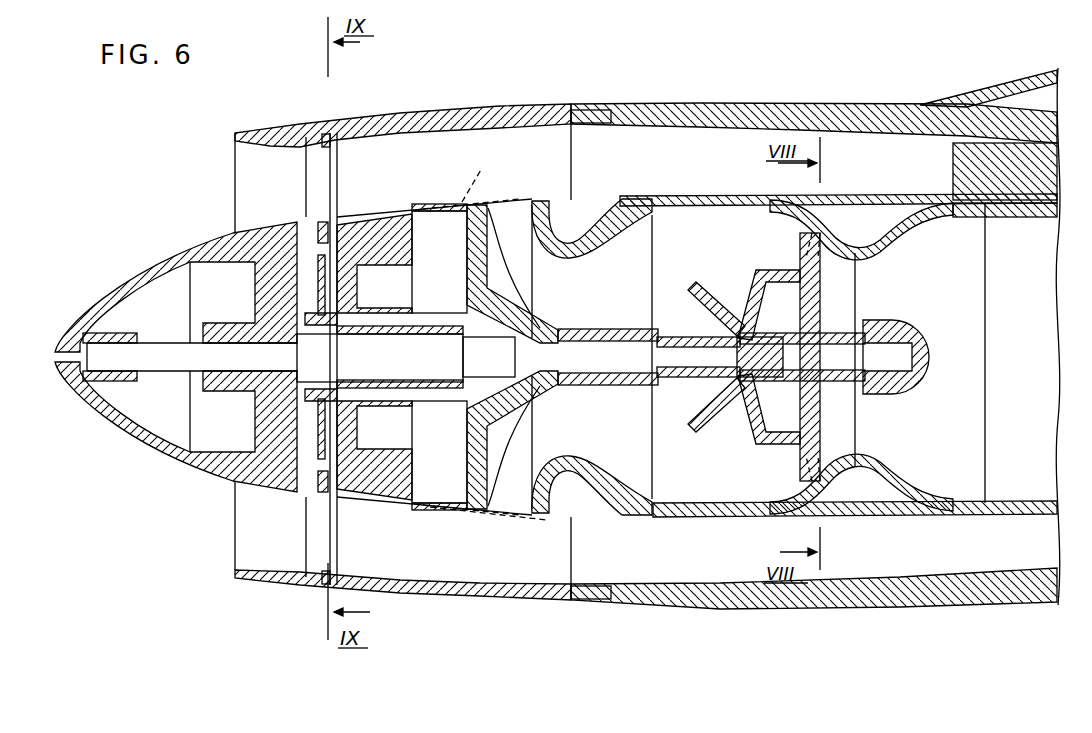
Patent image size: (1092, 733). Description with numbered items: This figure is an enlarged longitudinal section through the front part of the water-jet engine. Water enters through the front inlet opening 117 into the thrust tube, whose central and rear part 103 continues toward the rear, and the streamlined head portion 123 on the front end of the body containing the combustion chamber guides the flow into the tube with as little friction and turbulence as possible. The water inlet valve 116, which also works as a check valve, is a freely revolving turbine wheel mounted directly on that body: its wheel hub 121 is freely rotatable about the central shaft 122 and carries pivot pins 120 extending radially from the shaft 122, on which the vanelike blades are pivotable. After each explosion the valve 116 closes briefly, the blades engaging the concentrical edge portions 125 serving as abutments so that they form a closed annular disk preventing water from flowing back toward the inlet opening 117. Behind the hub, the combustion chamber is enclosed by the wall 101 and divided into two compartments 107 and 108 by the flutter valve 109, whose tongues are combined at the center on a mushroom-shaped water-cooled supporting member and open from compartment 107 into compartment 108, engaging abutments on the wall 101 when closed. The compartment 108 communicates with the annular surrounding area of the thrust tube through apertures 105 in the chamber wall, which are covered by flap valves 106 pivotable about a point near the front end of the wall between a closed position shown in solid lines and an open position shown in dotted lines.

The wall 101 is at (853, 242).
The central and rear part of thrust tube 103 is at (967, 593).
The apertures 105 is at (513, 210).
The flap valves 106 is at (503, 190).
The compartment 107 is at (1027, 361).
The compartment 108 is at (703, 275).
The flutter valve 109 is at (820, 287).
The water inlet valve 116 is at (380, 213).
The front inlet opening 117 is at (280, 203).
The pivot pins 120 is at (333, 547).
The wheel hub 121 is at (352, 291).
The central shaft 122 is at (405, 370).
The streamlined head portion 123 is at (140, 265).
The concentrical edge portions 125 is at (327, 568).